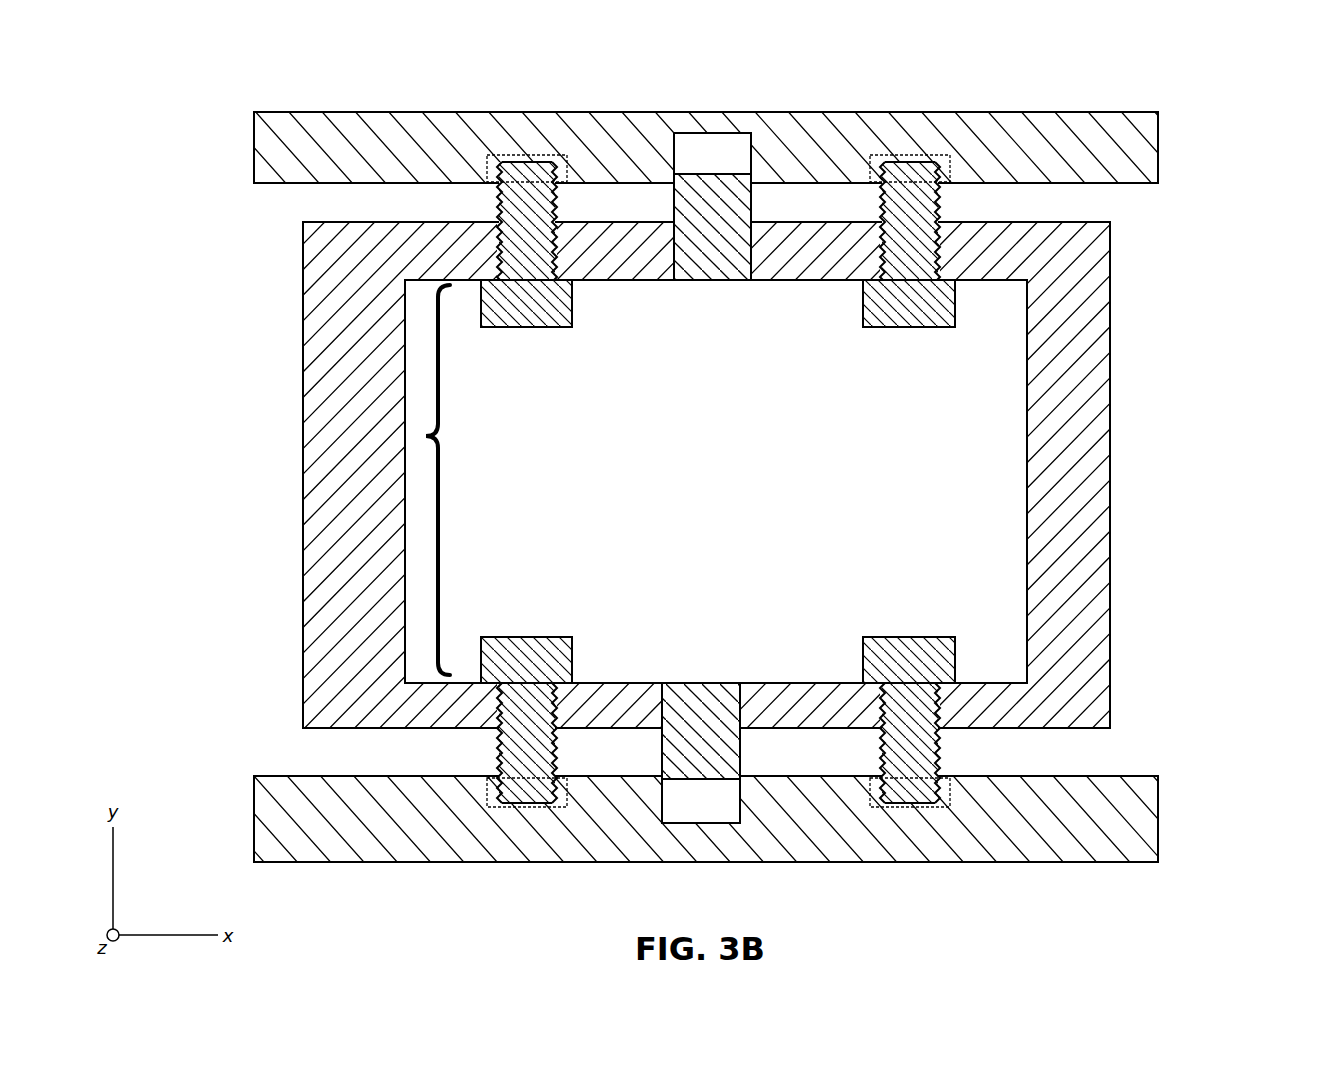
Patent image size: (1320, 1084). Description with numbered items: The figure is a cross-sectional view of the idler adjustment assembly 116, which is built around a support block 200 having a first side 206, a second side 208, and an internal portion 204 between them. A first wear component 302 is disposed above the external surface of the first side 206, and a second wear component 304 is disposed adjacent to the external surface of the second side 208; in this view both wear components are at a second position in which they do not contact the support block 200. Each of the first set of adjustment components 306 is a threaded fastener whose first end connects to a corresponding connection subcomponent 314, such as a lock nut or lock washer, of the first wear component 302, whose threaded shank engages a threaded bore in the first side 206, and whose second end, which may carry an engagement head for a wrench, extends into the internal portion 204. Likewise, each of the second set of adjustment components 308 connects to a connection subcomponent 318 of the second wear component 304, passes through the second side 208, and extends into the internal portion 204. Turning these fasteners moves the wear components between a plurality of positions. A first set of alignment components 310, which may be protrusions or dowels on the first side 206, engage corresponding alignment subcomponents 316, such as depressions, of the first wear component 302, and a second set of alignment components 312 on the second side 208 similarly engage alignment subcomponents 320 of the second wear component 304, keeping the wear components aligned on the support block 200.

The idler adjustment assembly 116 is at (248, 88).
The support block 200 is at (1072, 473).
The internal portion 204 is at (416, 437).
The first side 206 is at (427, 218).
The second side 208 is at (410, 732).
The first wear component 302 is at (1128, 150).
The second wear component 304 is at (1108, 816).
The first set of adjustment components 306 is at (855, 333).
The second set of adjustment components 308 is at (575, 632).
The first set of alignment components 310 is at (710, 256).
The second set of alignment components 312 is at (703, 722).
The first set of connection subcomponents 314 is at (567, 158).
The first set of alignment subcomponents 316 is at (732, 150).
The second set of connection subcomponents 318 is at (866, 806).
The second set of alignment subcomponents 320 is at (714, 806).